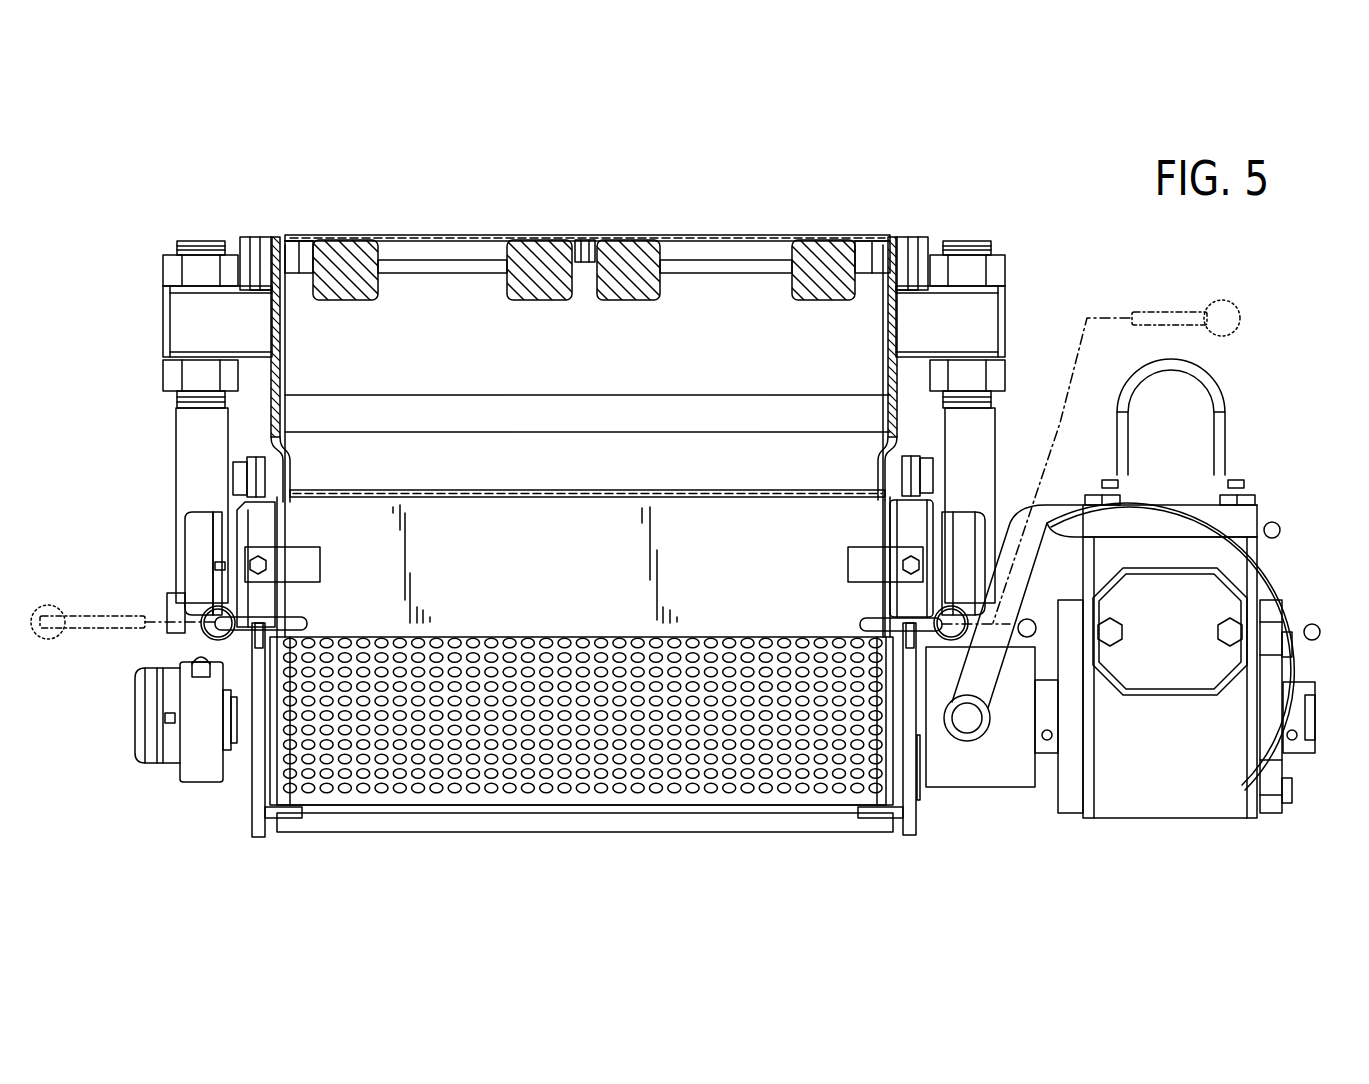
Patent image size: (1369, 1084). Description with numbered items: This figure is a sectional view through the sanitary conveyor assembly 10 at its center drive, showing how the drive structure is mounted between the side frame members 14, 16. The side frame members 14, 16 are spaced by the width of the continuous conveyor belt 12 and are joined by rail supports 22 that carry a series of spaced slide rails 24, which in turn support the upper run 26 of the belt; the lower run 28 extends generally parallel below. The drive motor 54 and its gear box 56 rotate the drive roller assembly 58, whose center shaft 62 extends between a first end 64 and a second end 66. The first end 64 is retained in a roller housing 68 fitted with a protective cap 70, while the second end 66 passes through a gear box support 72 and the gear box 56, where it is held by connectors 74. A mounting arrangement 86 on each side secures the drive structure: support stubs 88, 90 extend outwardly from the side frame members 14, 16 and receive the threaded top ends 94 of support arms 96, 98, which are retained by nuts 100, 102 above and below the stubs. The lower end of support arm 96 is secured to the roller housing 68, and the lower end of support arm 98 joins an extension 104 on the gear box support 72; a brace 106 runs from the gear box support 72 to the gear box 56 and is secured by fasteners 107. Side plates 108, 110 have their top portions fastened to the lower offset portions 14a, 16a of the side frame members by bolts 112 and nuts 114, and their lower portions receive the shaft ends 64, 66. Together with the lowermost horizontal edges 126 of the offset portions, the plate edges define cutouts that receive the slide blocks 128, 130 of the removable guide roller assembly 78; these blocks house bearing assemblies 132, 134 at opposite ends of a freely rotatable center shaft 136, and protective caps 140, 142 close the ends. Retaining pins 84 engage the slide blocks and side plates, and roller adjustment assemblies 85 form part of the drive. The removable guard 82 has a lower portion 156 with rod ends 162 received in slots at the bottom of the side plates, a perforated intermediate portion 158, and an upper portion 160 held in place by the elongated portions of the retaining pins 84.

The sanitary conveyor assembly 10 is at (623, 186).
The continuous conveyor belt 12 is at (446, 232).
The side frame member 14 is at (282, 335).
The lower offset portion 14a is at (268, 445).
The side frame member 16 is at (888, 378).
The lower offset portion 16a is at (895, 453).
The rail support 22 is at (570, 366).
The slide rail 24 is at (338, 252).
The upper run 26 is at (730, 262).
The lower run 28 is at (680, 490).
The drive motor 54 is at (1283, 550).
The gear box 56 is at (1240, 750).
The drive roller assembly 58 is at (1005, 790).
The center shaft 62 is at (918, 740).
The first end 64 is at (236, 745).
The second end 66 is at (1315, 720).
The roller housing 68 is at (200, 782).
The protective cap 70 is at (150, 762).
The gear box support 72 is at (963, 765).
The connectors 74 is at (1047, 683).
The guide roller assembly 78 is at (164, 548).
The removable guard 82 is at (605, 797).
The retaining pin 84 is at (285, 620).
The roller adjustment assembly 85 is at (205, 640).
The mounting arrangement 86 is at (609, 396).
The support stub 88 is at (180, 322).
The support stub 90 is at (960, 345).
The threaded top end 94 is at (200, 241).
The support arm 96 is at (195, 460).
The support arm 98 is at (975, 500).
The nut 100 is at (240, 375).
The nut 102 is at (190, 270).
The extension 104 is at (176, 616).
The brace 106 is at (1188, 510).
The fastener 107 is at (1095, 497).
The side plate 108 is at (255, 830).
The side plate 110 is at (908, 834).
The bolt 112 is at (237, 483).
The nut 114 is at (262, 477).
The lowermost horizontal edge 126 is at (258, 512).
The slide block 128 is at (265, 550).
The slide block 130 is at (910, 593).
The bearing assembly 132 is at (218, 520).
The bearing assembly 134 is at (965, 545).
The center shaft 136 is at (887, 542).
The protective cap 140 is at (190, 567).
The protective cap 142 is at (1060, 547).
The lower portion 156 is at (695, 825).
The intermediate portion 158 is at (530, 806).
The upper portion 160 is at (555, 592).
The rod end 162 is at (290, 818).